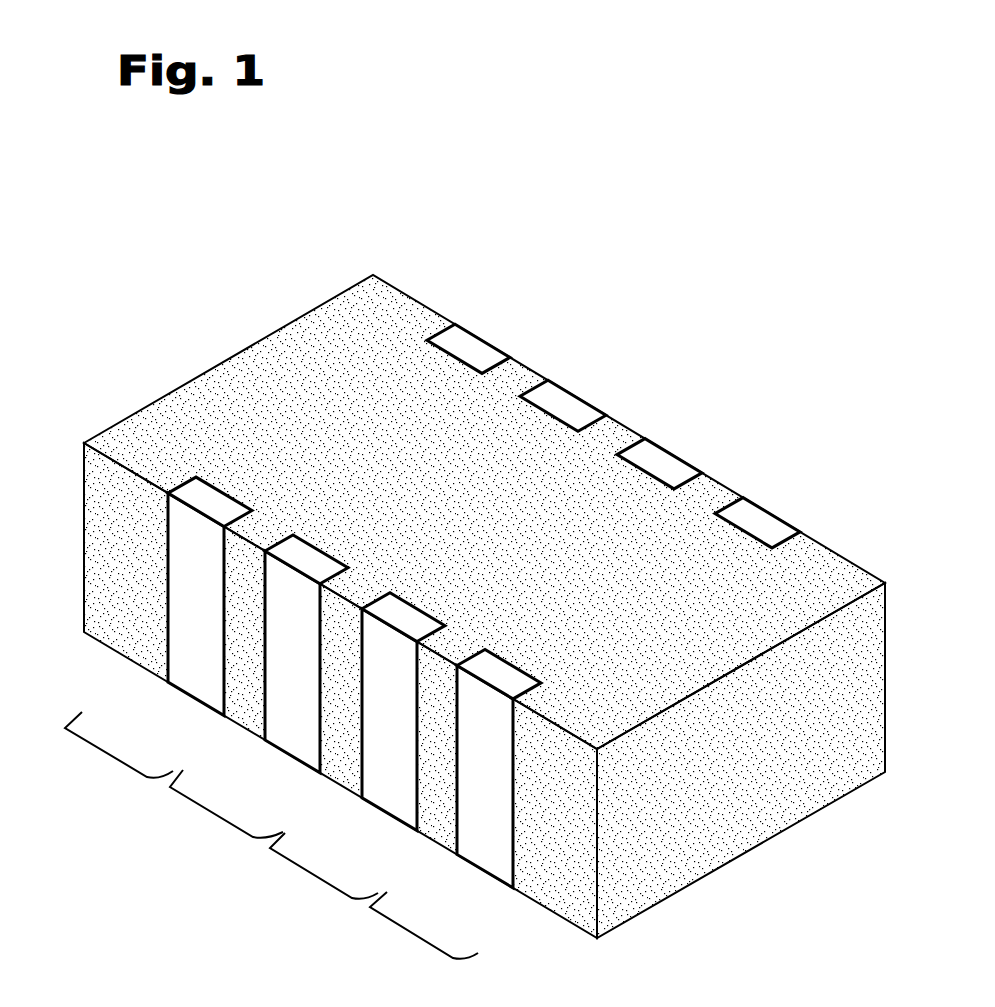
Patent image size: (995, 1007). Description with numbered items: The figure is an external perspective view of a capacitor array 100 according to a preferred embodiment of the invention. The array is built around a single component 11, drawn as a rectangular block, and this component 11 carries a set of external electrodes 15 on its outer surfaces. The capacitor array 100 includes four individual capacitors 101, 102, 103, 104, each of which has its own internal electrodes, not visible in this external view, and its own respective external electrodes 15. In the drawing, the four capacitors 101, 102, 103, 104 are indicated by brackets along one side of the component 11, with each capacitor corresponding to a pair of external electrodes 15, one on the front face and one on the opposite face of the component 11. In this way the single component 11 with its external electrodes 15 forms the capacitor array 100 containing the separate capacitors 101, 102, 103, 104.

The capacitor array 100 is at (484, 601).
The component 11 is at (253, 367).
The external electrodes 15 is at (483, 346).
The capacitor 101 is at (109, 754).
The capacitor 102 is at (216, 814).
The capacitor 103 is at (316, 874).
The capacitor 104 is at (417, 936).